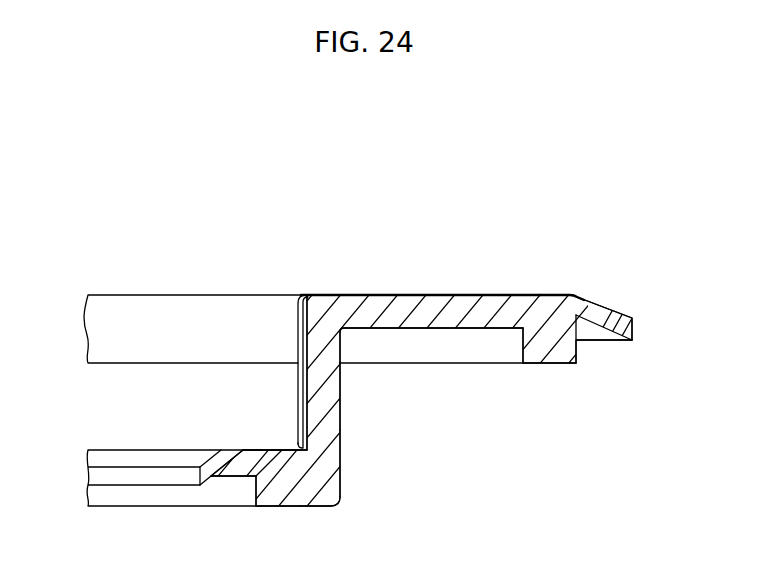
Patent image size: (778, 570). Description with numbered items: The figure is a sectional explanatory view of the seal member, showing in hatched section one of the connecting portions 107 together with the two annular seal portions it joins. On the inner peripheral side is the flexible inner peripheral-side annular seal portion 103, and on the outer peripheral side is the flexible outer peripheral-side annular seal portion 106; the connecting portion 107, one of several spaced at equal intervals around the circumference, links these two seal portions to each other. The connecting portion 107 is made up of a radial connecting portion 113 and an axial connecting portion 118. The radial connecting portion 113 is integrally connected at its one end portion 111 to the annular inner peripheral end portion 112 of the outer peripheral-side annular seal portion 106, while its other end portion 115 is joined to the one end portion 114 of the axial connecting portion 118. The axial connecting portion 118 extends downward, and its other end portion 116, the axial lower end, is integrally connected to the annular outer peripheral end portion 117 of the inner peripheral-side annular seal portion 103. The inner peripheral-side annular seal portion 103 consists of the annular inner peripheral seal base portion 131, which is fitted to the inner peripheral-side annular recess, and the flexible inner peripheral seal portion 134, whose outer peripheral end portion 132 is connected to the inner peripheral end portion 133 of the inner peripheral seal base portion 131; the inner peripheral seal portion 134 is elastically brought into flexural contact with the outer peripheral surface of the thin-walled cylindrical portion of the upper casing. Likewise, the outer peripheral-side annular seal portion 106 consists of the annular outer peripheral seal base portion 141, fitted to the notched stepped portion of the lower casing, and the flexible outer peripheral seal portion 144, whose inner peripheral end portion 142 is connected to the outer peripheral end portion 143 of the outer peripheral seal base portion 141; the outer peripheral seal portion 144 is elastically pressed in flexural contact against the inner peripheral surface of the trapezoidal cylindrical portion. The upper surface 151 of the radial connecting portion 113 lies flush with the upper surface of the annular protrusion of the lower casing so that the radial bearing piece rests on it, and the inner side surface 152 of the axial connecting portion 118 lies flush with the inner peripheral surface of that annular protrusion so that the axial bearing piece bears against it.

The inner peripheral-side annular seal portion 103 is at (341, 479).
The outer peripheral-side annular seal portion 106 is at (513, 295).
The connecting portion 107 is at (343, 295).
The one end portion of the radial connecting portion 111 is at (492, 304).
The annular inner peripheral end portion 112 is at (534, 312).
The radial connecting portion 113 is at (418, 305).
The one end portion of the axial connecting portion 114 is at (320, 316).
The other end portion of the radial connecting portion 115 is at (346, 331).
The other end portion of the axial connecting portion 116 is at (326, 442).
The annular outer peripheral end portion 117 is at (327, 488).
The axial connecting portion 118 is at (320, 402).
The inner peripheral seal base portion 131 is at (312, 478).
The outer peripheral end portion 132 is at (256, 466).
The inner peripheral end portion 133 is at (265, 487).
The inner peripheral seal portion 134 is at (217, 466).
The outer peripheral seal base portion 141 is at (562, 347).
The inner peripheral end portion 142 is at (583, 305).
The outer peripheral end portion 143 is at (559, 304).
The outer peripheral seal portion 144 is at (626, 326).
The upper surface 151 is at (363, 294).
The inner side surface 152 is at (300, 323).